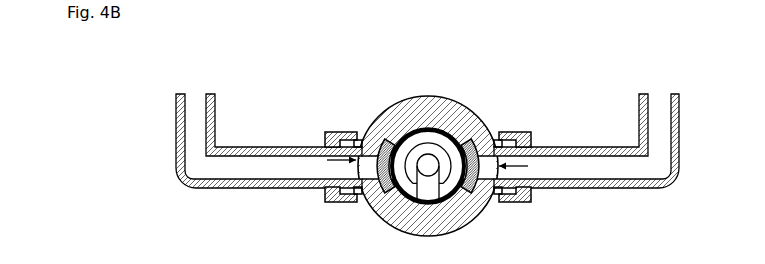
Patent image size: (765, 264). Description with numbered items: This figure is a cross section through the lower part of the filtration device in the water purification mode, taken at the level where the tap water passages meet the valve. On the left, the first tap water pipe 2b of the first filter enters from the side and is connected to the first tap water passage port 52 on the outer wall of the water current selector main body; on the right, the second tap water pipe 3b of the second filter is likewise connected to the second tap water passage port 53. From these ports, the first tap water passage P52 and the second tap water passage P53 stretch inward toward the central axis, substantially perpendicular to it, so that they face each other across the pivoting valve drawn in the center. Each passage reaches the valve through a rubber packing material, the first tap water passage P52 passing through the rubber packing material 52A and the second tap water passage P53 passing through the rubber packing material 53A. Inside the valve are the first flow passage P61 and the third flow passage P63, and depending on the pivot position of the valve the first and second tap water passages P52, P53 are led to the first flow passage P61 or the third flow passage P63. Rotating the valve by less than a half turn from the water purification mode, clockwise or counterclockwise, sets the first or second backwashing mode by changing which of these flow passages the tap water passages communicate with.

The first tap water pipe 2b is at (253, 148).
The second tap water pipe 3b is at (580, 146).
The first tap water passage port 52 is at (352, 162).
The second tap water passage port 53 is at (500, 165).
The rubber packing material 52A is at (378, 140).
The rubber packing material 53A is at (471, 138).
The first flow passage P61 is at (414, 143).
The third flow passage P63 is at (430, 190).
The first tap water passage P52 is at (354, 171).
The second tap water passage P53 is at (500, 176).